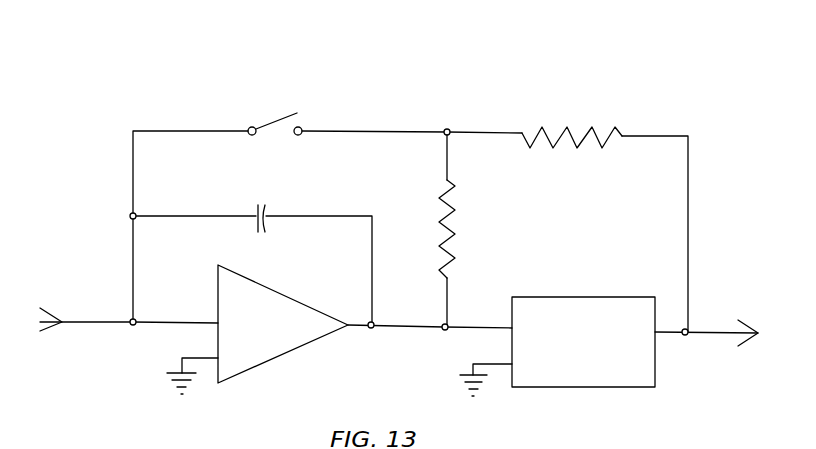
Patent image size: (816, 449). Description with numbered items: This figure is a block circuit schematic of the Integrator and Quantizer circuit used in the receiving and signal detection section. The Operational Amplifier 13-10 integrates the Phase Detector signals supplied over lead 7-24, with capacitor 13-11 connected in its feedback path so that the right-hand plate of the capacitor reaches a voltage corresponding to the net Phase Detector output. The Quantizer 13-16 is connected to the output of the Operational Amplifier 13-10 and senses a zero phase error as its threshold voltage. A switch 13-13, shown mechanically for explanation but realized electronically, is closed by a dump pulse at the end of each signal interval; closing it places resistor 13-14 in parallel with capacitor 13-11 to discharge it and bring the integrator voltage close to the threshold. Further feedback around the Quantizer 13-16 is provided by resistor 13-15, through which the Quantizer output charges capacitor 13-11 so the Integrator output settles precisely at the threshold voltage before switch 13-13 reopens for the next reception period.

The lead 7-24 is at (118, 325).
The switch 13-13 is at (318, 100).
The capacitor 13-11 is at (283, 194).
The Operational Amplifier 13-10 is at (262, 290).
The resistor 13-14 is at (453, 226).
The resistor 13-15 is at (575, 129).
The Quantizer 13-16 is at (626, 275).